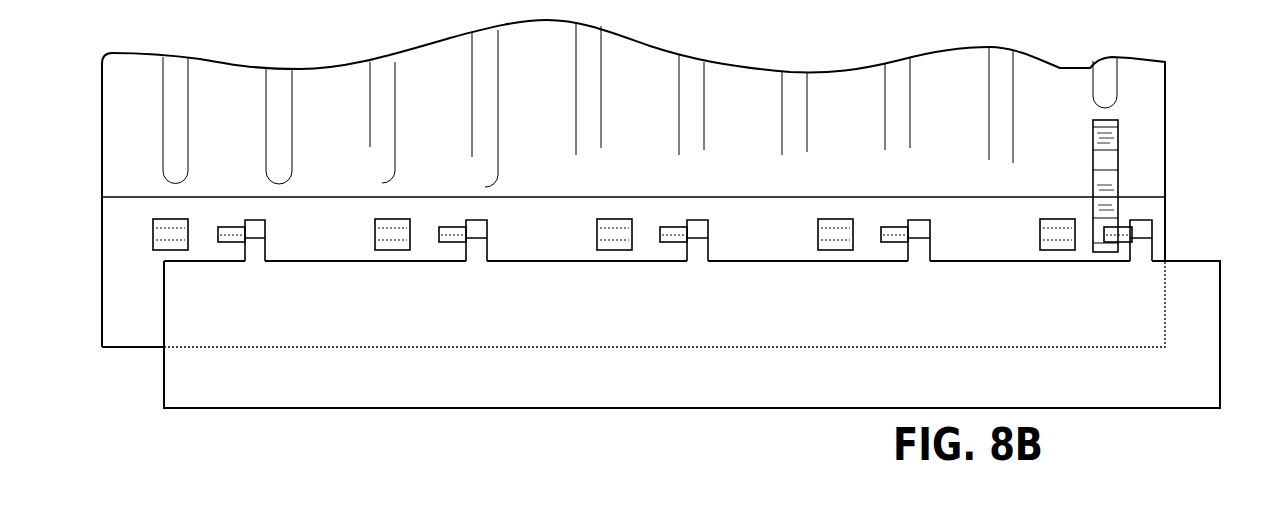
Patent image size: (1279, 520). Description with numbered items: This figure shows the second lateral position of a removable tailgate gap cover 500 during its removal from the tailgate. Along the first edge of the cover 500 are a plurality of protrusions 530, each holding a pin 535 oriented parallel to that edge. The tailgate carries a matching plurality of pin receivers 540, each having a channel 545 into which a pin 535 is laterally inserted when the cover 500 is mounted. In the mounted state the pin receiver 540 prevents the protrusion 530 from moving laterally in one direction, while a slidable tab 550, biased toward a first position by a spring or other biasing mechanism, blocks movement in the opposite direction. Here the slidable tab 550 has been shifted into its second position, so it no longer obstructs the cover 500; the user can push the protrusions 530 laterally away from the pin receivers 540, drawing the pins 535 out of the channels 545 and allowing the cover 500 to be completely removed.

The tailgate gap cover 500 is at (268, 389).
The protrusion 530 is at (258, 233).
The pin 535 is at (230, 229).
The pin receiver 540 is at (167, 219).
The channel 545 is at (172, 240).
The slidable tab 550 is at (1113, 163).